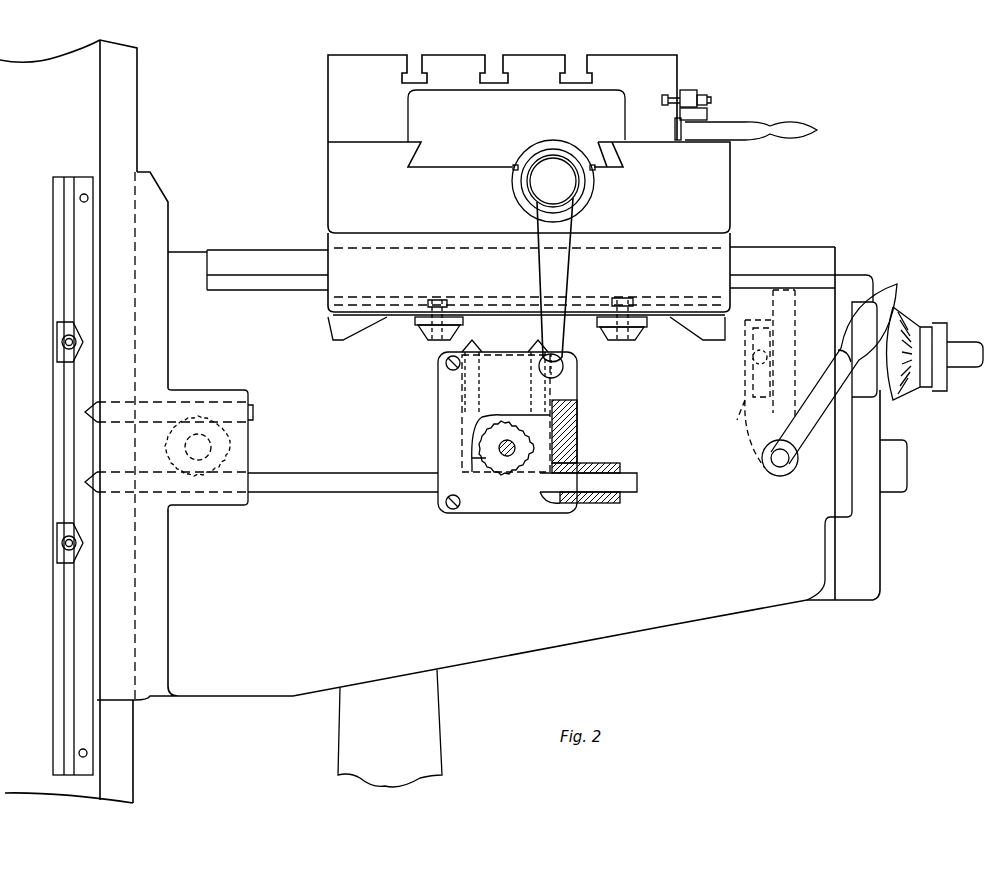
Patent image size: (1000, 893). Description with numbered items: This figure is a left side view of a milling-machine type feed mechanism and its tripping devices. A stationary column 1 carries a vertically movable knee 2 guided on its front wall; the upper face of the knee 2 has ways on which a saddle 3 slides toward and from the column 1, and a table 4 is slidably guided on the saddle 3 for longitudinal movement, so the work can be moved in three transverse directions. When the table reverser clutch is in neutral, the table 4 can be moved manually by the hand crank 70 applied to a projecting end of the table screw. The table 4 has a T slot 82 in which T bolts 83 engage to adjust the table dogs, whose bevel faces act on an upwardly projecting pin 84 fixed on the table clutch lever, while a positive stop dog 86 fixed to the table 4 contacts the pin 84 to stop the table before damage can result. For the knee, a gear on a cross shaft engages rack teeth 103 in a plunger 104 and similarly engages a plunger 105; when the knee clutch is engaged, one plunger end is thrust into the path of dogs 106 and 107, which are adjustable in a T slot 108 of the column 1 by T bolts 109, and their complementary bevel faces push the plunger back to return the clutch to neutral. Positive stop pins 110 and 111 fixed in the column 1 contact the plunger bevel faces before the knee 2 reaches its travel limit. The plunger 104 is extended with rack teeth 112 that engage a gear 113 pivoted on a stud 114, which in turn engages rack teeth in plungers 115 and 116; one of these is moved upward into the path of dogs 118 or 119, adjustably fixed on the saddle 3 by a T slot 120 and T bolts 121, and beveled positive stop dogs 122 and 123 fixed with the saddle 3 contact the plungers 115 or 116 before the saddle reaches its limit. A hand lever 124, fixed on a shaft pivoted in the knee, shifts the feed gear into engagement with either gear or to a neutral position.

The column 1 is at (137, 136).
The knee 2 is at (564, 641).
The saddle 3 is at (328, 193).
The table 4 is at (328, 106).
The hand crank 70 is at (574, 233).
The T slot 82 is at (677, 93).
The T bolts 83 is at (705, 97).
The pin 84 is at (708, 116).
The positive stop dog 86 is at (676, 122).
The rack teeth 103 is at (226, 471).
The plunger 104 is at (296, 496).
The plunger 105 is at (172, 410).
The dog 106 is at (60, 355).
The dog 107 is at (60, 552).
The T slot 108 is at (68, 290).
The T bolts 109 is at (62, 342).
The stop pin 110 is at (80, 199).
The stop pin 111 is at (79, 753).
The rack teeth 112 is at (542, 473).
The gear 113 is at (494, 472).
The stud 114 is at (508, 440).
The plunger 115 is at (476, 365).
The plunger 116 is at (535, 388).
The dog 118 is at (418, 337).
The dog 119 is at (638, 341).
The T slot 120 is at (601, 301).
The T bolts 121 is at (432, 346).
The positive stop dog 122 is at (334, 346).
The positive stop dog 123 is at (711, 345).
The hand lever 124 is at (892, 298).